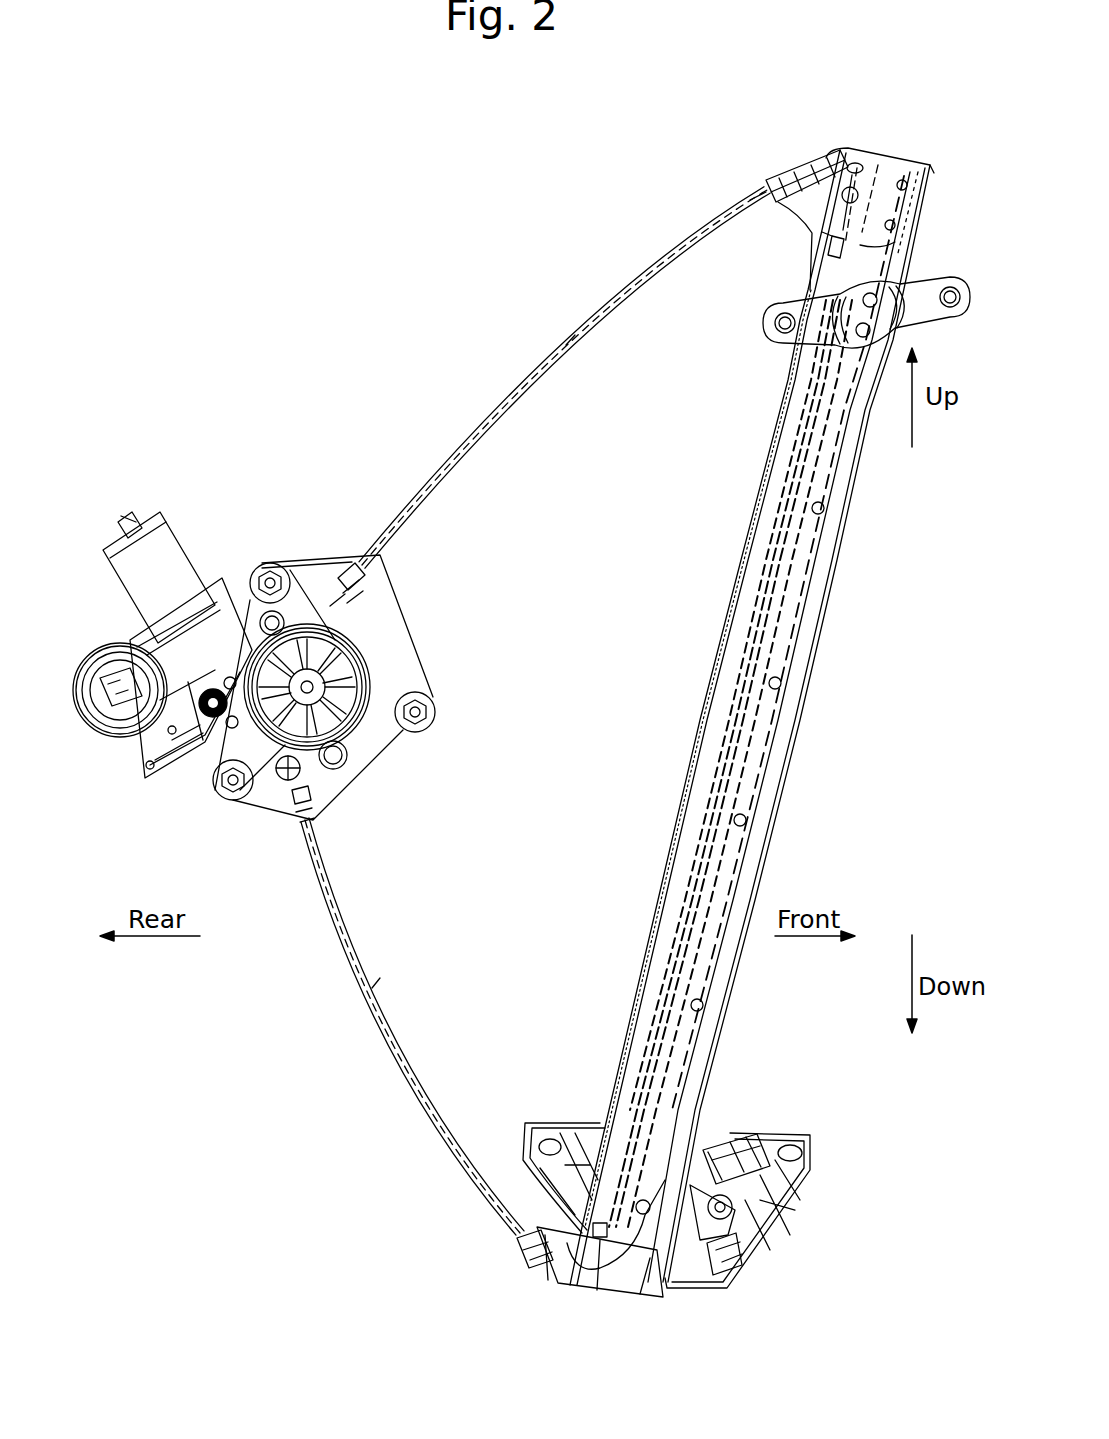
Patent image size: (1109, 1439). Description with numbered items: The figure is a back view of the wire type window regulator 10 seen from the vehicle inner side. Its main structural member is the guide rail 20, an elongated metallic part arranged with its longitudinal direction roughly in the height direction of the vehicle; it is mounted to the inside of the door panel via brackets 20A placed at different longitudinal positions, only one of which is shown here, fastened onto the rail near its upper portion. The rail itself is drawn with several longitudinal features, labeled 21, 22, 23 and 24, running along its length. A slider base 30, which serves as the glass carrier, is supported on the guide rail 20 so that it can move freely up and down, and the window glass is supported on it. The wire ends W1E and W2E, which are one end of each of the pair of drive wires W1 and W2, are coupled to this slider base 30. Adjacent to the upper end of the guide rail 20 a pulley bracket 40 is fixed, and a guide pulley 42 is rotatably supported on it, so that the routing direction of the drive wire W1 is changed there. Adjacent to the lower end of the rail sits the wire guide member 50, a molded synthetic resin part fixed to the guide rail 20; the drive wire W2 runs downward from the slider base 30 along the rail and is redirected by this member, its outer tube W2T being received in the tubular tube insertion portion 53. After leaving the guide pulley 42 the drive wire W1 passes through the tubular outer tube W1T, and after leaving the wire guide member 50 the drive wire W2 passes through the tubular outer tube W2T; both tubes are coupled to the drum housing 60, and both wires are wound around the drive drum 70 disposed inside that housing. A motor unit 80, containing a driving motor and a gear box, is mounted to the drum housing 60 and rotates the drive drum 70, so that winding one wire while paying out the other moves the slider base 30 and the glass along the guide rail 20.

The wire type window regulator 10 is at (641, 241).
The guide rail 20 is at (848, 573).
The bracket 20A is at (775, 332).
The rail side wall 21 is at (823, 608).
The rail guide groove 22 is at (790, 622).
The rail flange 23 is at (808, 650).
The rail rear edge 24 is at (705, 727).
The slider base 30 is at (564, 1094).
The pulley bracket 40 is at (806, 166).
The guide pulley 42 is at (820, 148).
The wire guide member 50 is at (612, 1296).
The tubular tube insertion portion 53 is at (526, 1250).
The drum housing 60 is at (306, 527).
The drive drum 70 is at (345, 722).
The motor unit 80 is at (218, 512).
The drive wire W1 is at (590, 362).
The outer tube W1T is at (566, 338).
The wire end W1E is at (716, 1270).
The drive wire W2 is at (423, 1087).
The outer tube W2T is at (375, 983).
The wire end W2E is at (752, 1178).